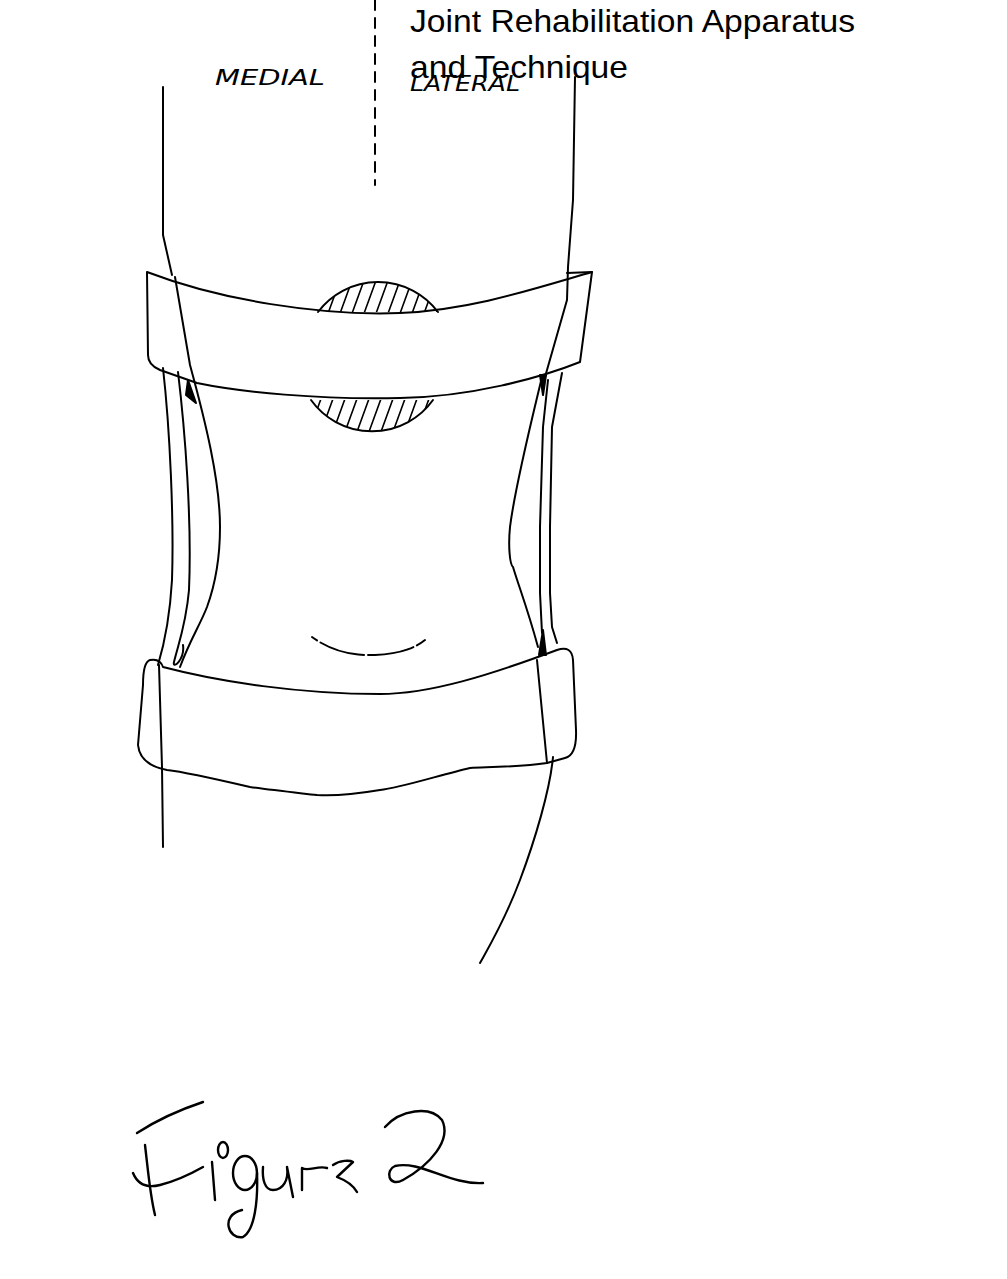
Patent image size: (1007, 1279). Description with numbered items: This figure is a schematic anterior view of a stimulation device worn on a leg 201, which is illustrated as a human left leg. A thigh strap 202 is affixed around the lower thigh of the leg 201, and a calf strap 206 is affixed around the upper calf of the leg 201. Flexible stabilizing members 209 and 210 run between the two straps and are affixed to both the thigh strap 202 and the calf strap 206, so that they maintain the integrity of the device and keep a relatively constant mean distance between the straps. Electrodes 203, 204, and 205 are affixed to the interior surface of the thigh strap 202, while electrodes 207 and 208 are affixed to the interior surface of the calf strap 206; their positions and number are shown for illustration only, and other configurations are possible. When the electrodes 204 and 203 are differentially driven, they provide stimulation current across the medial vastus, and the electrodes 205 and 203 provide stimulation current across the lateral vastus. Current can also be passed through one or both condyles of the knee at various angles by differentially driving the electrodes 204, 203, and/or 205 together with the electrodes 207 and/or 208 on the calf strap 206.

The leg 201 is at (578, 180).
The thigh strap 202 is at (713, 318).
The electrode 203 is at (350, 243).
The electrode 204 is at (68, 228).
The electrode 205 is at (574, 266).
The calf strap 206 is at (675, 674).
The electrode 207 is at (160, 780).
The electrode 208 is at (667, 753).
The flexible stabilizing member 209 is at (552, 527).
The flexible stabilizing member 210 is at (166, 568).